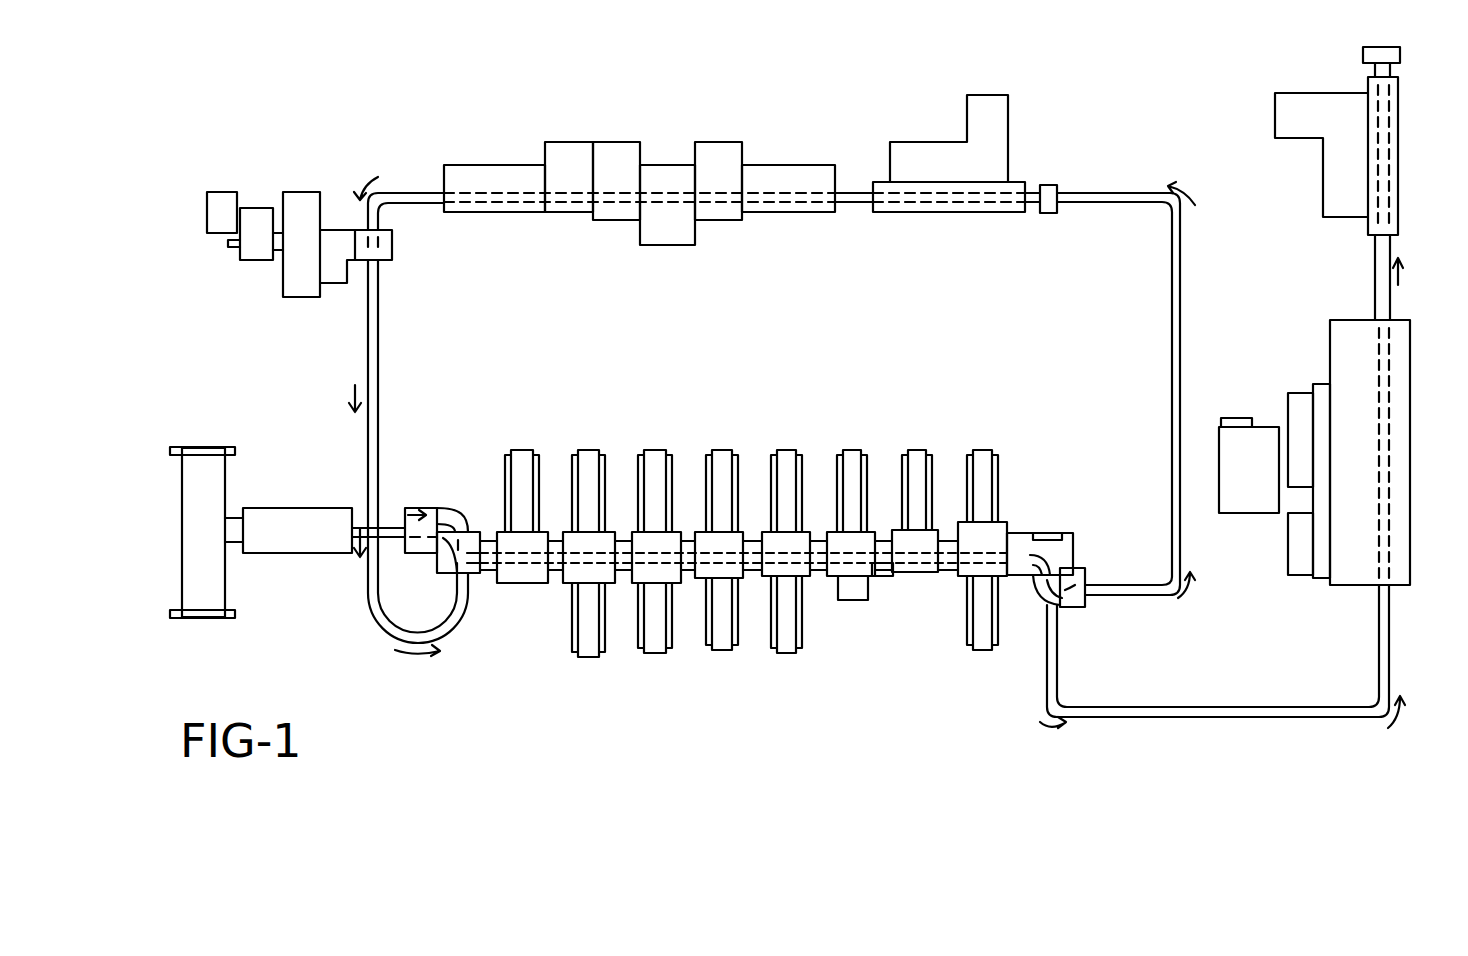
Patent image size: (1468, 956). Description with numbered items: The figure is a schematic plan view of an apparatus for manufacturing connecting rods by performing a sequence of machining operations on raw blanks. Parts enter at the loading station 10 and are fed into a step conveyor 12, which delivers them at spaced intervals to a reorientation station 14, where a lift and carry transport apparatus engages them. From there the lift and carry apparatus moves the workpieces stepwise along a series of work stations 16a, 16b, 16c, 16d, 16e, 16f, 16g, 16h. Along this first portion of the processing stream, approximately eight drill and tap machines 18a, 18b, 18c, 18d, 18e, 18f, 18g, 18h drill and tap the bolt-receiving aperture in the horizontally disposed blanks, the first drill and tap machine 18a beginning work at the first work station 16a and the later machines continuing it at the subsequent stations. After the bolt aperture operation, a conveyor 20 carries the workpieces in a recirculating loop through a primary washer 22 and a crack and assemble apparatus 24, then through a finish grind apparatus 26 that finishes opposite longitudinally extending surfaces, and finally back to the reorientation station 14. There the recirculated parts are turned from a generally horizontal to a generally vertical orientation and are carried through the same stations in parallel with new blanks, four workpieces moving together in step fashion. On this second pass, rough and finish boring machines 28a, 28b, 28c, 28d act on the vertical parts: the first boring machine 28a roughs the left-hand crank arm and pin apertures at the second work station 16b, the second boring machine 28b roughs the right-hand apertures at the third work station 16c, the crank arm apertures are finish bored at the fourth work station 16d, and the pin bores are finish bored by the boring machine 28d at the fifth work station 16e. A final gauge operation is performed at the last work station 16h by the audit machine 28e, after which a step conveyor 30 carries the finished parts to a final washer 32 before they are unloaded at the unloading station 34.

The loading station 10 is at (292, 508).
The step conveyor 12 is at (385, 530).
The reorientation station 14 is at (478, 530).
The first work station 16a is at (510, 585).
The second work station 16b is at (618, 585).
The third work station 16c is at (678, 585).
The fourth work station 16d is at (745, 580).
The fifth work station 16e is at (812, 577).
The work station 16f is at (835, 602).
The work station 16g is at (940, 530).
The work station 16h is at (1005, 525).
The first drill and tap machine 18a is at (530, 452).
The second drill and tap machine 18b is at (583, 452).
The third drill and tap machine 18c is at (648, 452).
The fourth drill and tap machine 18d is at (715, 452).
The fifth drill and tap machine 18e is at (780, 452).
The drill and tap machine 18f is at (850, 452).
The drill and tap machine 18g is at (912, 452).
The drill and tap machine 18h is at (990, 452).
The conveyor 20 is at (368, 347).
The primary washer 22 is at (940, 214).
The crack and assemble apparatus 24 is at (722, 220).
The finish grind apparatus 26 is at (392, 245).
The rough boring machine 28a is at (580, 658).
The second boring machine 28b is at (663, 657).
The boring machine 28c is at (733, 655).
The boring machine 28d is at (800, 655).
The audit machine 28e is at (985, 653).
The step conveyor 30 is at (1250, 707).
The final washer 32 is at (1410, 455).
The unloading station 34 is at (1398, 125).